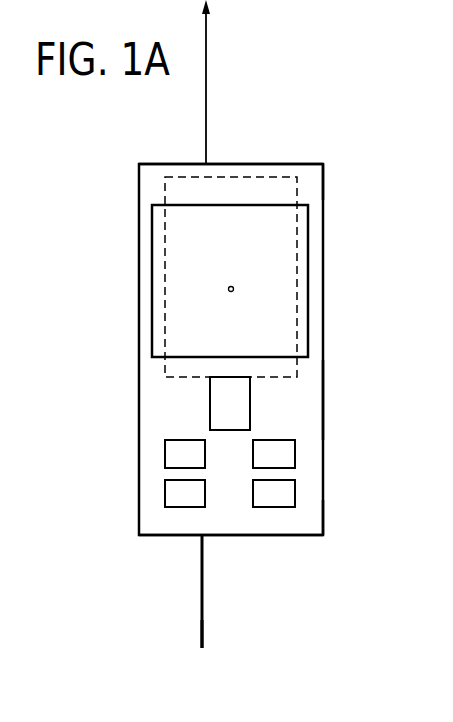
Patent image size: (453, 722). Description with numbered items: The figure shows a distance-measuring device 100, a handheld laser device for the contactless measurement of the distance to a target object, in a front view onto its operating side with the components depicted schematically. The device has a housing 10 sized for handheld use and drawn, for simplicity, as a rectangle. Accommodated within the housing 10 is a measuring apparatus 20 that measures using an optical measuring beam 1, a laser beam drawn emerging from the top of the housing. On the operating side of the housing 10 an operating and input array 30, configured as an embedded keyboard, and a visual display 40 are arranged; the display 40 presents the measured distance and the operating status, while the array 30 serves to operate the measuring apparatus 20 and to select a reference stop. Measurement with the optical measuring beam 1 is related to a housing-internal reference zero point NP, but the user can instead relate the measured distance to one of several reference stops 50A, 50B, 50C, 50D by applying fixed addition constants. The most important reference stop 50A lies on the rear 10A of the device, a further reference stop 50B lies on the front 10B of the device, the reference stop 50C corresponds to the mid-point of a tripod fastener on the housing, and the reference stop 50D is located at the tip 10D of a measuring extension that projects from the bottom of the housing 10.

The distance-measuring device 100 is at (306, 72).
The optical measuring beam 1 is at (207, 93).
The housing 10 is at (138, 403).
The rear of the device 10A is at (160, 536).
The front of the device 10B is at (300, 163).
The tip of a measuring extension 10D is at (201, 649).
The measuring apparatus 20 is at (298, 223).
The operating and input array 30 is at (306, 452).
The visual display 40 is at (309, 263).
The reference stop 50A is at (334, 539).
The reference stop 50B is at (332, 165).
The reference stop 50C is at (333, 398).
The reference stop 50D is at (214, 643).
The housing-internal reference zero point NP is at (233, 286).